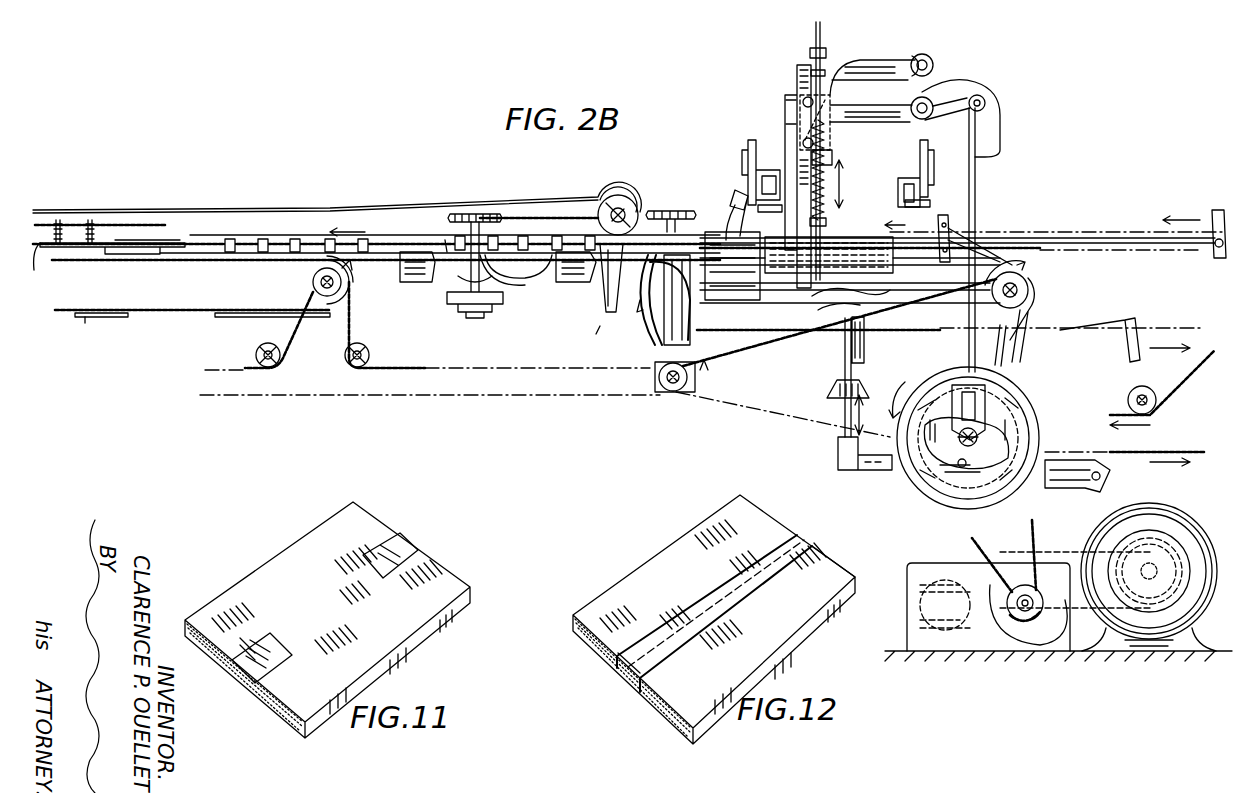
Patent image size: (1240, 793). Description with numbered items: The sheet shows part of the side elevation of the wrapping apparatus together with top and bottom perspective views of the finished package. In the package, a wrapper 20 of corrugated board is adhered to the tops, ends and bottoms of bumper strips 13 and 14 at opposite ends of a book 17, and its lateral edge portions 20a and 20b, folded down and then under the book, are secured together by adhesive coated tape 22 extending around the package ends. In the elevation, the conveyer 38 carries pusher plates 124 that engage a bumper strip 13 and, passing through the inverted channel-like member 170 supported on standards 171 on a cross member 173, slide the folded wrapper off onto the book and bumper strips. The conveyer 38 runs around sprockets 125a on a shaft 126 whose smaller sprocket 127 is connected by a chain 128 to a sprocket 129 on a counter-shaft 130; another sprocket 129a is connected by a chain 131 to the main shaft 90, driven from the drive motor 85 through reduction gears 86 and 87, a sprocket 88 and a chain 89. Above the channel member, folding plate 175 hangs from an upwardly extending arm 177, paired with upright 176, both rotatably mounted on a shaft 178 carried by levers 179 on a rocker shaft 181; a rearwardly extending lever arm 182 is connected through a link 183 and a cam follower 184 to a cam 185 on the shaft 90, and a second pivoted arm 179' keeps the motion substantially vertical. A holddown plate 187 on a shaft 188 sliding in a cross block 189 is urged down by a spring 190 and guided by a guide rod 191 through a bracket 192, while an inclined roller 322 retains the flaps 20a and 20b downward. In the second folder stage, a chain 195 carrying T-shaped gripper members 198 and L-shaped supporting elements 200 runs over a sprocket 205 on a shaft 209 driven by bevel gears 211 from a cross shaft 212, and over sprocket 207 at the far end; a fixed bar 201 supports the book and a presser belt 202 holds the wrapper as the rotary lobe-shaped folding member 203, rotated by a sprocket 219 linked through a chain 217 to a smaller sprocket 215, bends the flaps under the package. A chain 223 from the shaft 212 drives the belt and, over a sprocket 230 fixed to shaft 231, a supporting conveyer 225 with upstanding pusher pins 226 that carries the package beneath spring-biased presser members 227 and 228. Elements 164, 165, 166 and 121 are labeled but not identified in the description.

In FIG. 2B, the presser belt 202 is at (252, 210).
In FIG. 2B, the sprocket 205 is at (660, 210).
In FIG. 2B, the chain 217 is at (524, 212).
In FIG. 2B, the sprocket 219 is at (470, 210).
In FIG. 2B, the smaller sprocket 215 is at (678, 208).
In FIG. 2B, the T-shaped gripper member 198 is at (305, 238).
In FIG. 2B, the L-shaped supporting element 200 is at (386, 231).
In FIG. 2B, the chain 195 is at (445, 240).
In FIG. 2B, the sprocket 207 is at (208, 236).
In FIG. 2B, the spring-biased presser member 227 is at (137, 238).
In FIG. 2B, the spring-biased presser member 228 is at (40, 250).
In FIG. 2B, the supporting conveyer 225 is at (125, 318).
In FIG. 2B, the upstanding pusher pin 226 is at (86, 319).
In FIG. 2B, the supporting shaft 231 is at (318, 283).
In FIG. 2B, the sprocket 230 is at (330, 298).
In FIG. 2B, the chain 223 is at (390, 368).
In FIG. 2B, the rotary lobe-shaped folding member 203 is at (528, 268).
In FIG. 2B, the fixed bar 201 is at (582, 270).
In FIG. 2B, the lateral edge portion of wrapper 20a is at (596, 334).
In FIG. 12, the lateral edge portion of wrapper 20a is at (768, 518).
In FIG. 2B, the sprocket 125a is at (662, 312).
In FIG. 2B, the shaft 209 is at (668, 358).
In FIG. 2B, the inclined roller 322 is at (735, 230).
In FIG. 2B, the cross shaft 212 is at (679, 390).
In FIG. 2B, the bevel gears 211 is at (660, 366).
In FIG. 2B, the shaft 126 is at (724, 371).
In FIG. 2B, the smaller sprocket 127 is at (752, 333).
In FIG. 2B, the channel-like member 170 is at (930, 300).
In FIG. 2B, the folding plate 175 is at (787, 272).
In FIG. 2B, the upwardly extending arm 177 is at (806, 303).
In FIG. 2B, the standard 171 is at (843, 352).
In FIG. 2B, the cross member 173 is at (830, 397).
In FIG. 2B, the upwardly extending arm 176 is at (798, 158).
In FIG. 2B, the shaft 188 is at (821, 40).
In FIG. 2B, the spring 190 is at (849, 170).
In FIG. 2B, the holddown plate 187 is at (844, 215).
In FIG. 2B, the cross block 189 is at (823, 108).
In FIG. 2B, the guide rod 191 is at (797, 95).
In FIG. 2B, the bracket 192 is at (790, 122).
In FIG. 2B, the pivoted arm 179' is at (881, 58).
In FIG. 2B, the lever 179 is at (871, 126).
In FIG. 2B, the rocker shaft 181 is at (930, 116).
In FIG. 2B, the lever arm 182 is at (963, 90).
In FIG. 2B, the link 183 is at (977, 190).
In FIG. 2B, the shaft 178 is at (832, 135).
In FIG. 2B, the bracket 165 is at (748, 152).
In FIG. 2B, the bracket 166 is at (918, 150).
In FIG. 2B, the guide 164 is at (935, 190).
In FIG. 2B, the bumper strip 14 is at (1038, 236).
In FIG. 11, the bumper strip 14 is at (272, 702).
In FIG. 2B, the book 17 is at (1108, 236).
In FIG. 2B, the conveyer 38 is at (1130, 234).
In FIG. 2B, the pusher plate 124 is at (950, 240).
In FIG. 2B, the bumper strip 13 is at (930, 240).
In FIG. 12, the bumper strip 13 is at (648, 698).
In FIG. 2B, the sprocket 129 is at (1030, 284).
In FIG. 2B, the counter-shaft 130 is at (1024, 298).
In FIG. 2B, the sprocket 129a is at (1020, 322).
In FIG. 2B, the chain 131 is at (990, 345).
In FIG. 2B, the chain 128 is at (950, 314).
In FIG. 2B, the cam follower 184 is at (936, 494).
In FIG. 2B, the main shaft 90 is at (1000, 398).
In FIG. 2B, the cam 185 is at (1024, 414).
In FIG. 2B, the chain 121 is at (1190, 378).
In FIG. 2B, the drive motor 85 is at (1148, 505).
In FIG. 2B, the reduction gear 86 is at (908, 619).
In FIG. 2B, the reduction gear 87 is at (1010, 645).
In FIG. 2B, the sprocket 88 is at (1021, 582).
In FIG. 2B, the chain 89 is at (1040, 550).
In FIG. 11, the wrapper 20 is at (285, 553).
In FIG. 11, the adhesive coated tape 22 is at (270, 640).
In FIG. 12, the adhesive coated tape 22 is at (705, 597).
In FIG. 12, the lateral edge portion of wrapper 20b is at (823, 565).